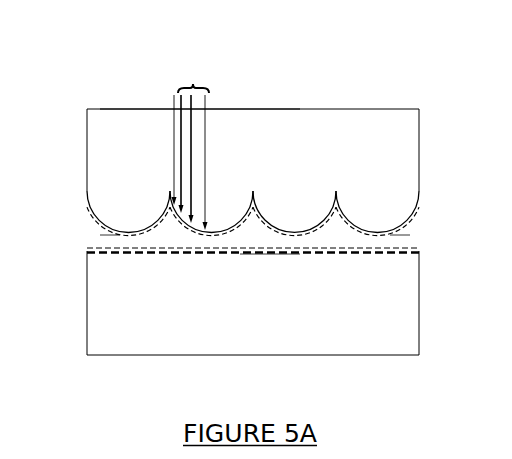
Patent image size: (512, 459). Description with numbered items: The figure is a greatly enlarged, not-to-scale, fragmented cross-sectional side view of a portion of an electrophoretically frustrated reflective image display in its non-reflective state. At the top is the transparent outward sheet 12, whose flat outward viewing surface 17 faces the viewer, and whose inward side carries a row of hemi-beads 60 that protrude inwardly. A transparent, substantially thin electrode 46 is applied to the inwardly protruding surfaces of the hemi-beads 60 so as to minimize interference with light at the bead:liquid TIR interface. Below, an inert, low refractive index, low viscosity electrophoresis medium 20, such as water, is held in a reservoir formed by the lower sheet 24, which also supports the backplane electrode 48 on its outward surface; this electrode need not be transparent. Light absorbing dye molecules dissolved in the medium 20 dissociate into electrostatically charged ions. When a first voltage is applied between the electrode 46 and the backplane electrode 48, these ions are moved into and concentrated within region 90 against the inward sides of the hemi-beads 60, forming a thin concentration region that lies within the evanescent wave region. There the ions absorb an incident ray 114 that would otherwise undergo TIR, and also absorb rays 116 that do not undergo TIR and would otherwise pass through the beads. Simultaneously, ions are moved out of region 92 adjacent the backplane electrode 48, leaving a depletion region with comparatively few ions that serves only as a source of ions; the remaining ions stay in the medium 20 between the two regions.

The transparent outward sheet 12 is at (88, 122).
The outward viewing surface 17 is at (110, 109).
The light ray 114 is at (174, 108).
The light rays 116 is at (193, 89).
The hemi-beads 60 is at (142, 221).
The electrode 46 is at (99, 221).
The concentration region 90 is at (102, 233).
The electrophoresis medium 20 is at (110, 243).
The depletion region 92 is at (92, 247).
The backplane electrode 48 is at (266, 254).
The lower sheet 24 is at (419, 297).